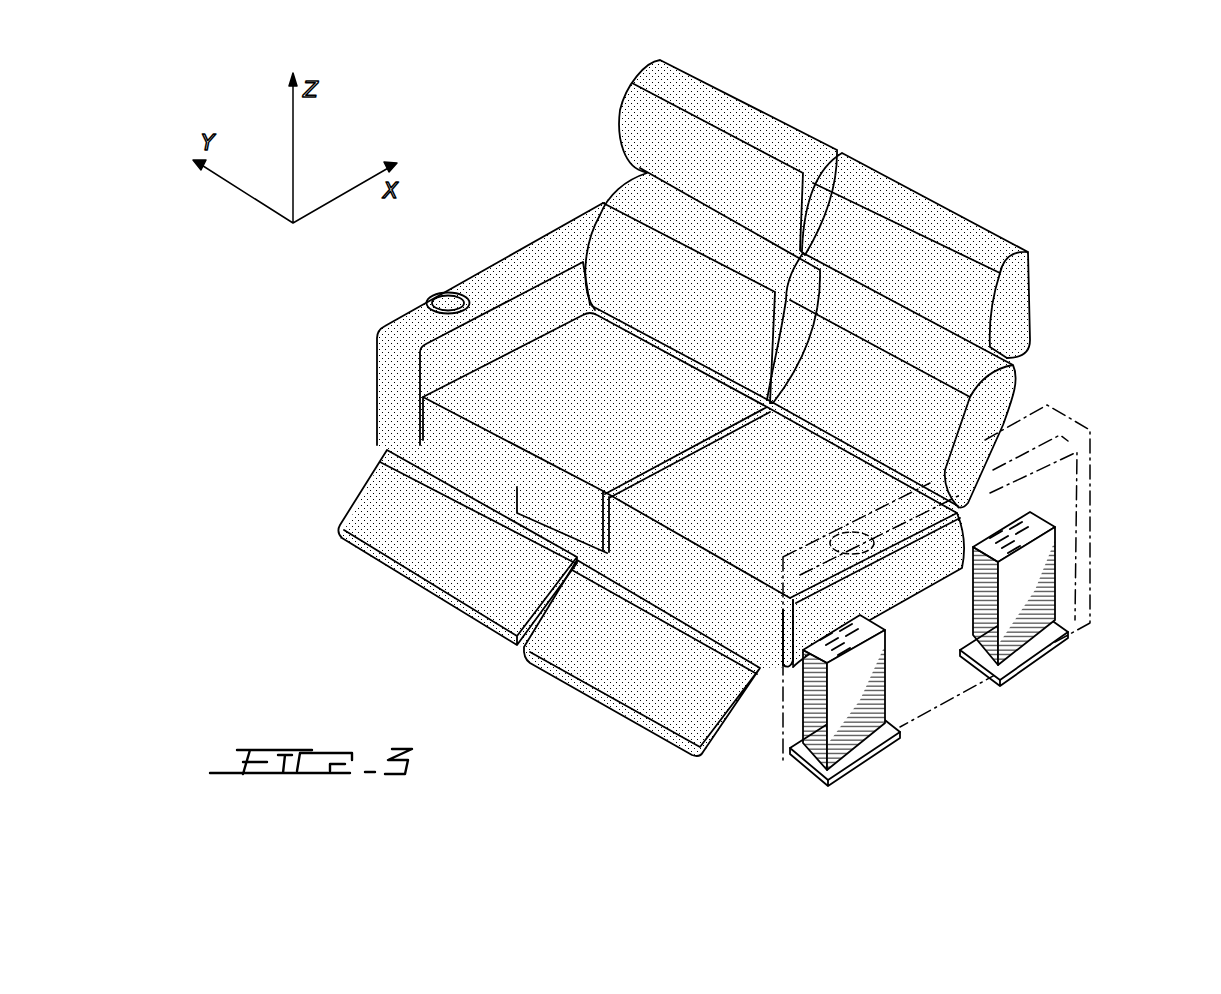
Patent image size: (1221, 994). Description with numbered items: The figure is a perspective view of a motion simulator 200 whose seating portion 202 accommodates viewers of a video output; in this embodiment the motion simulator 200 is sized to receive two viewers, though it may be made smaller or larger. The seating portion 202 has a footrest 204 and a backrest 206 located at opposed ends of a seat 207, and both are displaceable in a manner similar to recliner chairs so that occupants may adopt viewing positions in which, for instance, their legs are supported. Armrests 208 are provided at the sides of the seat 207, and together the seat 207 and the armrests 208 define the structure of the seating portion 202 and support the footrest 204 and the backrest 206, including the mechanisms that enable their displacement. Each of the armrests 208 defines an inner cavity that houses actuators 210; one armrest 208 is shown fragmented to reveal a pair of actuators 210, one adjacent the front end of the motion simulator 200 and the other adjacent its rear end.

The motion simulator 200 is at (390, 626).
The seating portion 202 is at (855, 133).
The footrest 204 is at (625, 653).
The backrest 206 is at (968, 240).
The seat 207 is at (770, 630).
The armrest 208 is at (515, 248).
The actuator 210 is at (1032, 630).